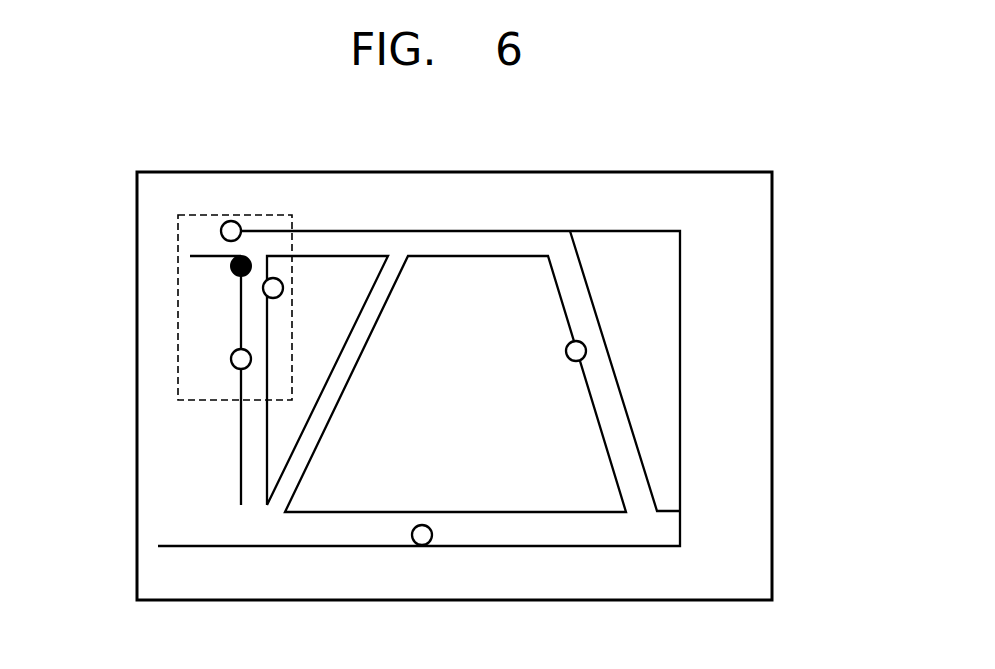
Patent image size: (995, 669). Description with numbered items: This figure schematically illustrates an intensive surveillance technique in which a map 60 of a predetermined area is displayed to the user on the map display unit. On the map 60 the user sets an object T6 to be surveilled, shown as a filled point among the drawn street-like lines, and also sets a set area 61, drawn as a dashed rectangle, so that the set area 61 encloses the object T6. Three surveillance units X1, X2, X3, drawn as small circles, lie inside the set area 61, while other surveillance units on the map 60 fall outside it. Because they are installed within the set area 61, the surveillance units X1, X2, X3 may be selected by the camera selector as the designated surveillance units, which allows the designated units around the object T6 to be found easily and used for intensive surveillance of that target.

The map 60 is at (772, 406).
The set area 61 is at (266, 213).
The surveillance unit X1 is at (221, 231).
The object to be surveilled T6 is at (231, 268).
The surveillance unit X2 is at (263, 289).
The surveillance unit X3 is at (231, 360).